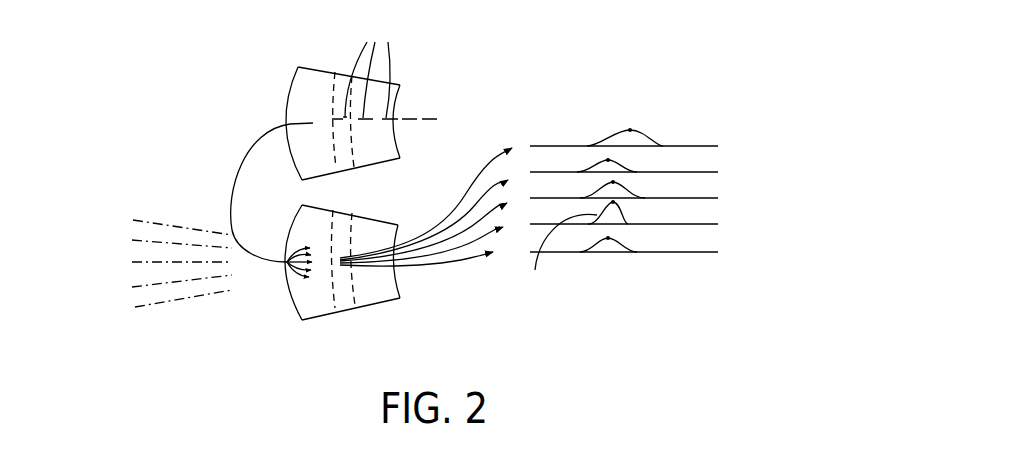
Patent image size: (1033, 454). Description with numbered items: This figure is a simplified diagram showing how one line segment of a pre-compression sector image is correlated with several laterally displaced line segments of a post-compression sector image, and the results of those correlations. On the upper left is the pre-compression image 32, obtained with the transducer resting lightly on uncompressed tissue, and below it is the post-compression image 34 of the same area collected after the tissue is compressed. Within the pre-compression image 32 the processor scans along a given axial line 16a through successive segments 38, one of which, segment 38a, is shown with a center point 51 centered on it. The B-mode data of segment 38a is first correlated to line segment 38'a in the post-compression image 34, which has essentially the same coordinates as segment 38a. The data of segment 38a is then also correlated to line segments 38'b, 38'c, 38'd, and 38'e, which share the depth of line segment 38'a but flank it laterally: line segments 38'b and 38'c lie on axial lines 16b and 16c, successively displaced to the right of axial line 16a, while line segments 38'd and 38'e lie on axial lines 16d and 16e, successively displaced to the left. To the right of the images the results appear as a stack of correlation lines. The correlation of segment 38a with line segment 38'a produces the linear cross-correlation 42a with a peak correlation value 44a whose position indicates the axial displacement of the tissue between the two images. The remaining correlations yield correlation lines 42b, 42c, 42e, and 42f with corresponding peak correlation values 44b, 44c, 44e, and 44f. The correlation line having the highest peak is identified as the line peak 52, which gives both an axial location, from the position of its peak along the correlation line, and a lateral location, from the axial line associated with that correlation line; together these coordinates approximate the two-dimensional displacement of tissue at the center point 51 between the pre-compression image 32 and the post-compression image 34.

The axial line 16a is at (408, 118).
The axial line 16b is at (147, 240).
The axial line 16c is at (158, 222).
The axial line 16d is at (140, 287).
The axial line 16e is at (153, 307).
The pre-compression image 32 is at (400, 83).
The post-compression image 34 is at (400, 298).
The segments 38 is at (365, 70).
The segment 38a is at (322, 118).
The line segment 38'a is at (423, 281).
The line segment 38'b is at (424, 220).
The line segment 38'c is at (426, 204).
The line segment 38'd is at (376, 291).
The line segment 38'e is at (402, 310).
The linear cross-correlation 42a is at (707, 197).
The correlation line 42b is at (710, 170).
The correlation line 42c is at (705, 143).
The correlation line 42e is at (708, 225).
The correlation line 42f is at (700, 253).
The peak correlation value 44a is at (613, 182).
The peak correlation value 44b is at (608, 160).
The peak correlation value 44c is at (630, 130).
The peak correlation value 44e is at (613, 202).
The peak correlation value 44f is at (608, 240).
The center point 51 is at (345, 118).
The line peak 52 is at (337, 260).